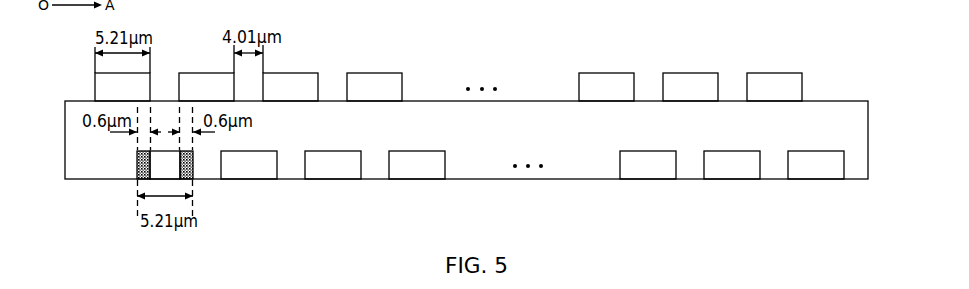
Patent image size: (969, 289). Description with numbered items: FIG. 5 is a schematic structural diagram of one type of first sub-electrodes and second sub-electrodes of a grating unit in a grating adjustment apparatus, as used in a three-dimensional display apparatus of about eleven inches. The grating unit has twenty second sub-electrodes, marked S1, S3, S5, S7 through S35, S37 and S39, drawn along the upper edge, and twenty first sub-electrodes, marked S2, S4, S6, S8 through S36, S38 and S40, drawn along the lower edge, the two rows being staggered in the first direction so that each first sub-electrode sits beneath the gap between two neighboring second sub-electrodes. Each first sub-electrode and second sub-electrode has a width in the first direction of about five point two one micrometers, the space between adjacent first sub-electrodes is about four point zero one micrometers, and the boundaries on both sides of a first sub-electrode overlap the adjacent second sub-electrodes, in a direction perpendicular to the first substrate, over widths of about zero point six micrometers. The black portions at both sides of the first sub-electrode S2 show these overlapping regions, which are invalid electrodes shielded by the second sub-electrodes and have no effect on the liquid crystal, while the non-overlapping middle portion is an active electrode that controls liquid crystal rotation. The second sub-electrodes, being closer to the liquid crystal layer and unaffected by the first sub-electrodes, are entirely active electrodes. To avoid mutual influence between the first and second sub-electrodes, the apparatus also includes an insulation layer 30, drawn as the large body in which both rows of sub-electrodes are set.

The insulation layer 30 is at (807, 125).
The second sub-electrode S1 is at (122, 87).
The first sub-electrode S2 is at (165, 165).
The second sub-electrode S3 is at (206, 87).
The first sub-electrode S4 is at (249, 165).
The second sub-electrode S5 is at (290, 87).
The first sub-electrode S6 is at (333, 165).
The second sub-electrode S7 is at (374, 87).
The first sub-electrode S8 is at (417, 165).
The second sub-electrode S35 is at (606, 87).
The first sub-electrode S36 is at (648, 165).
The second sub-electrode S37 is at (690, 87).
The first sub-electrode S38 is at (732, 165).
The second sub-electrode S39 is at (774, 87).
The first sub-electrode S40 is at (816, 165).